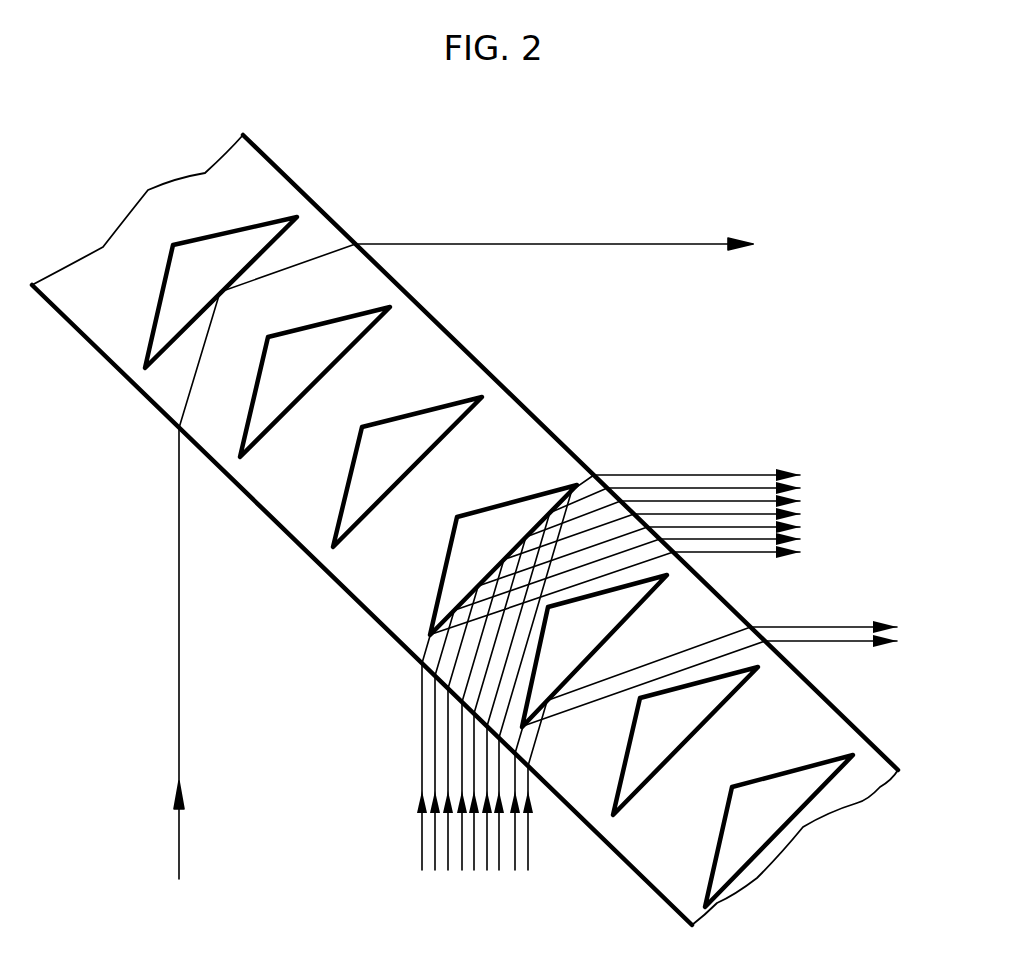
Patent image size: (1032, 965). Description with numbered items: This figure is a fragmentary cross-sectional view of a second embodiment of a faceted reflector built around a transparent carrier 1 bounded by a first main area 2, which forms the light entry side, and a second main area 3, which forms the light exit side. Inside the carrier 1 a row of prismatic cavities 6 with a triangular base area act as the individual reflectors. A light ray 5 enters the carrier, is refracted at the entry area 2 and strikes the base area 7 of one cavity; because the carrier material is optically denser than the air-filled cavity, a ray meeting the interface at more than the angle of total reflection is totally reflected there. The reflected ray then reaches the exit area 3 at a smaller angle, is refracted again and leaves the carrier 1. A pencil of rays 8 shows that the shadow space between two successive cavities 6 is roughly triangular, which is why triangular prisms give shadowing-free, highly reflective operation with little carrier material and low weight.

The transparent carrier 1 is at (460, 519).
The first main area 2 is at (640, 877).
The second main area 3 is at (273, 162).
The light ray 5 is at (263, 582).
The prismatic cavities 6 is at (242, 242).
The base area 7 is at (273, 247).
The pencil of rays 8 is at (657, 693).